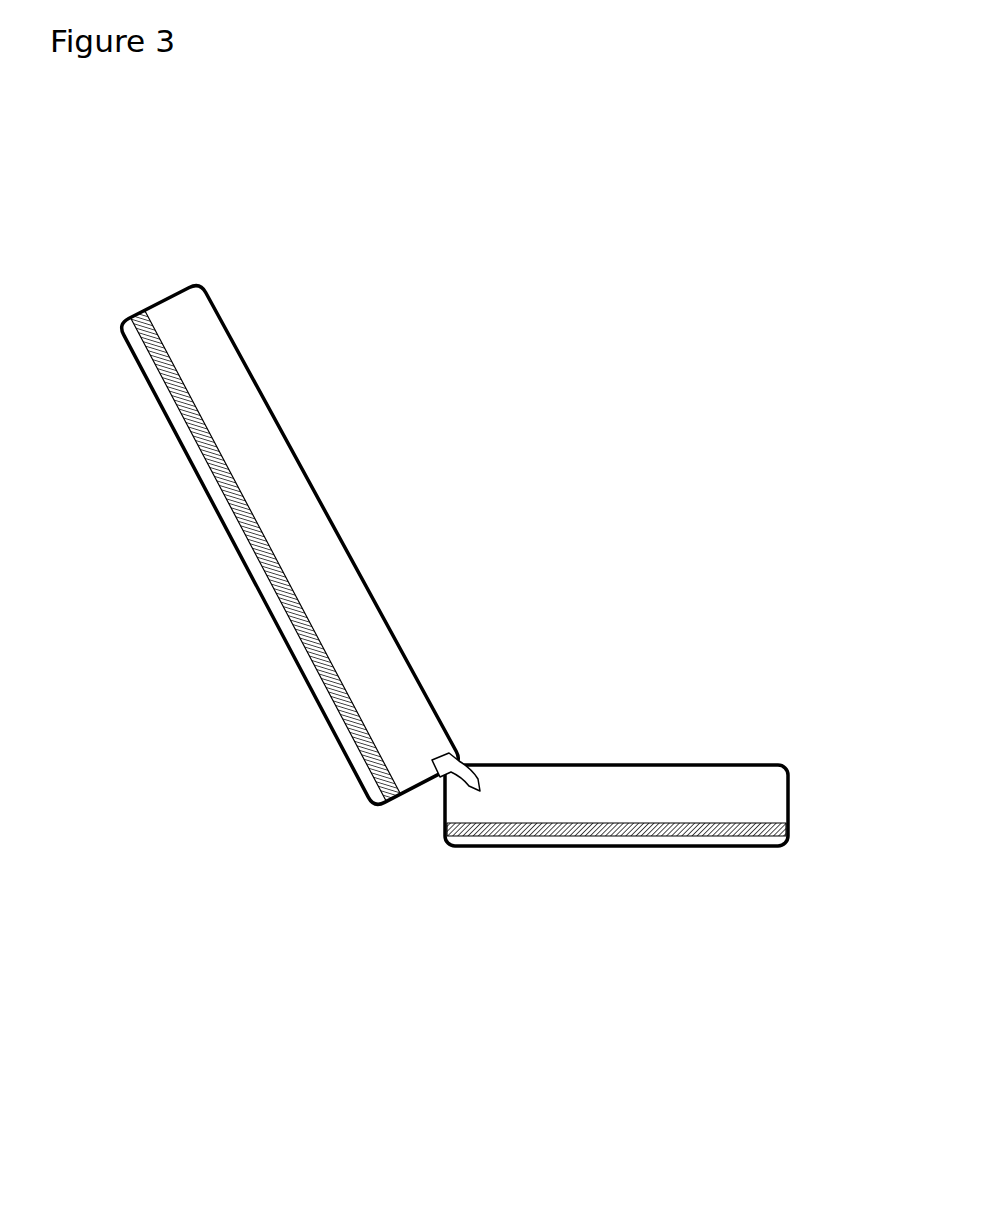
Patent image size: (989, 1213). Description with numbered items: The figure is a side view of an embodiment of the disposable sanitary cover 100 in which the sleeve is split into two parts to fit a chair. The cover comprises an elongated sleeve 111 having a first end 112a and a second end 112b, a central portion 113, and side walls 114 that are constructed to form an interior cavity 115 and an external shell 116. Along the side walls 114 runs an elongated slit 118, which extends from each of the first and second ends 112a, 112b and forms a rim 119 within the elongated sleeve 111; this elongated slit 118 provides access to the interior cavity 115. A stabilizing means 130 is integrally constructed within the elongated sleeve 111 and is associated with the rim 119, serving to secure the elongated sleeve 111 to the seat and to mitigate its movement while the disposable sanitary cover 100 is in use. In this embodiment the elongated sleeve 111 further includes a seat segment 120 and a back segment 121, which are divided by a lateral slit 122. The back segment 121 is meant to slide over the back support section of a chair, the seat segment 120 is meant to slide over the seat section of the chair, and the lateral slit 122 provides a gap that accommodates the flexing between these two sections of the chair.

The disposable sanitary cover 100 is at (515, 249).
The elongated sleeve 111 is at (360, 558).
The first end 112a is at (160, 302).
The second end 112b is at (778, 795).
The central portion 113 is at (297, 452).
The side walls 114 is at (378, 695).
The interior cavity 115 is at (262, 514).
The external shell 116 is at (252, 369).
The elongated slit 118 is at (263, 596).
The rim 119 is at (223, 530).
The seat segment 120 is at (656, 810).
The back segment 121 is at (357, 613).
The lateral slit 122 is at (423, 810).
The stabilizing means 130 is at (198, 427).